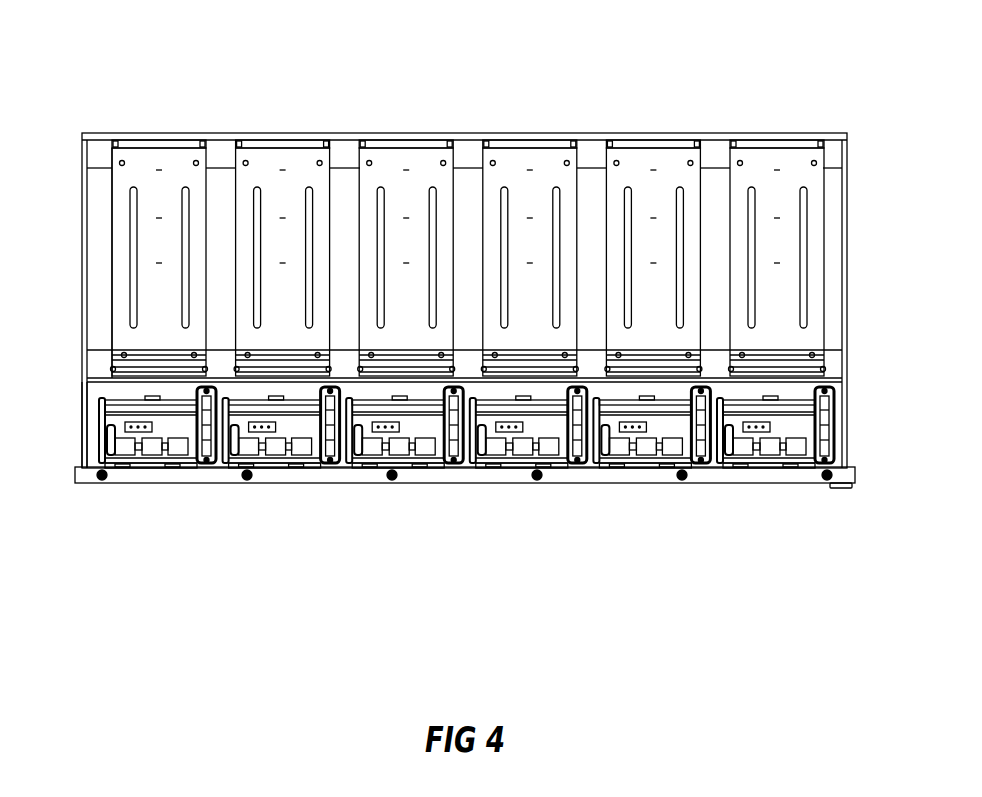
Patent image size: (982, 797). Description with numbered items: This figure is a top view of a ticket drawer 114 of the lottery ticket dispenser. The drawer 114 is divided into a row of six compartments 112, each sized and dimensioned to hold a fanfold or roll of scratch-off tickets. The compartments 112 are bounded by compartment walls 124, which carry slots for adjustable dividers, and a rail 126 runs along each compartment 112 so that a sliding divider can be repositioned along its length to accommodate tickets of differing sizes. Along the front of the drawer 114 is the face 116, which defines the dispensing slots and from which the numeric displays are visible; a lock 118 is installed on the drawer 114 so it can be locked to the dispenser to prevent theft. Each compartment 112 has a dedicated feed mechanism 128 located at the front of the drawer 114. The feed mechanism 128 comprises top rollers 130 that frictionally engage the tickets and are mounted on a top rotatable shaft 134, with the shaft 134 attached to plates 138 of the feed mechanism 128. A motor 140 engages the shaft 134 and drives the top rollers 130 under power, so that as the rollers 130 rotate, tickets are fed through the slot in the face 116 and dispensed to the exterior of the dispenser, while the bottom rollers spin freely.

The drawer 114 is at (348, 80).
The compartment 112 is at (158, 317).
The rail 126 is at (130, 198).
The compartment wall 124 is at (112, 306).
The feed mechanism 128 is at (93, 443).
The top roller 130 is at (400, 455).
The top rotatable shaft 134 is at (507, 455).
The plate 138 is at (693, 468).
The motor 140 is at (835, 430).
The face 116 is at (198, 483).
The lock 118 is at (838, 490).